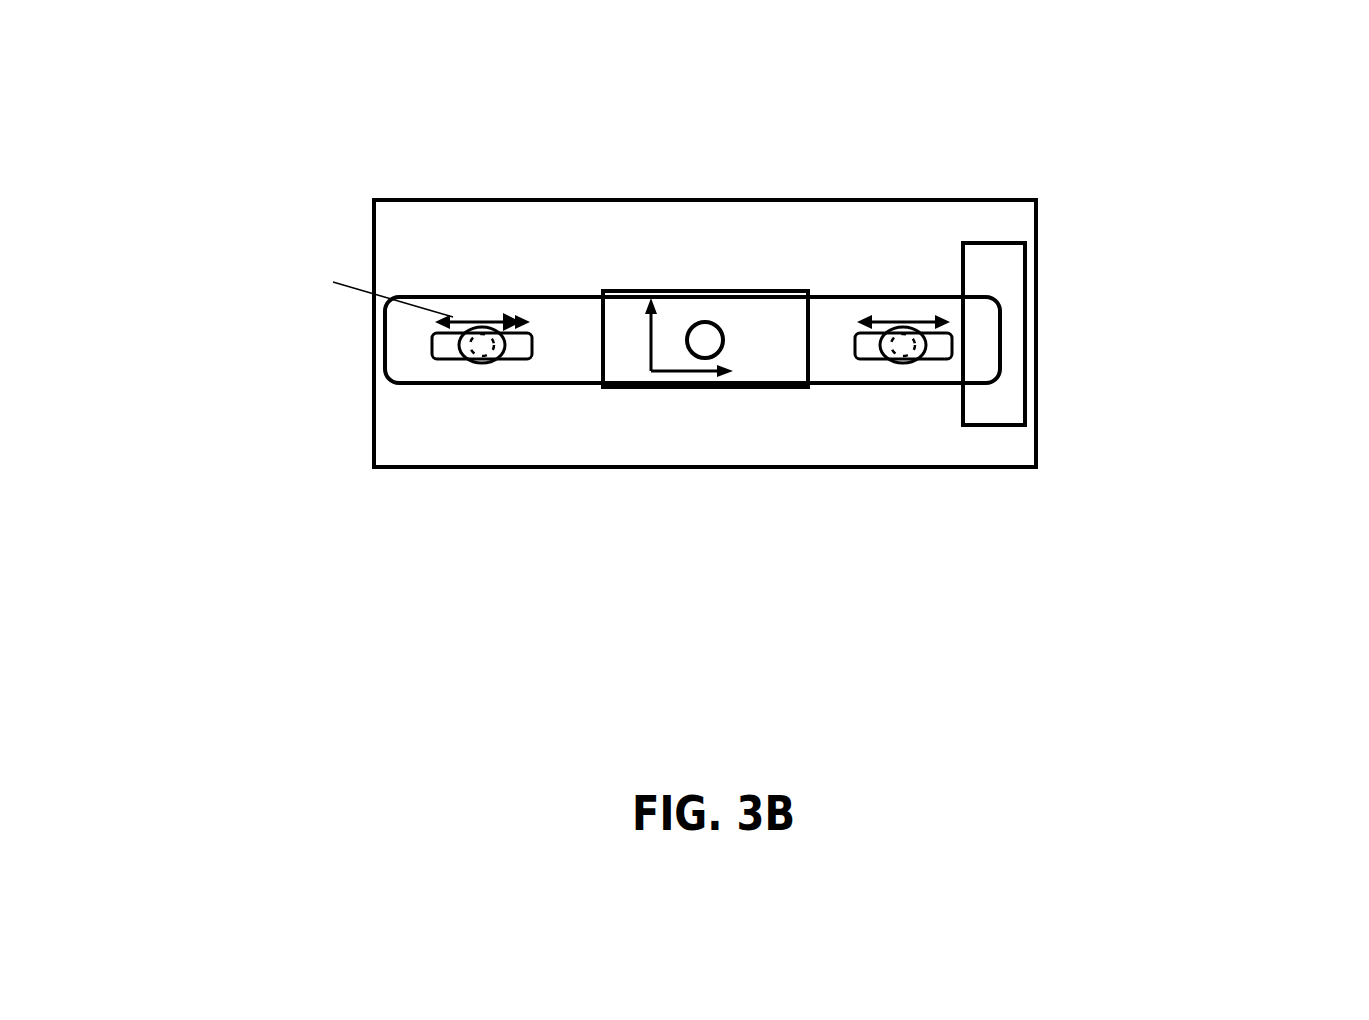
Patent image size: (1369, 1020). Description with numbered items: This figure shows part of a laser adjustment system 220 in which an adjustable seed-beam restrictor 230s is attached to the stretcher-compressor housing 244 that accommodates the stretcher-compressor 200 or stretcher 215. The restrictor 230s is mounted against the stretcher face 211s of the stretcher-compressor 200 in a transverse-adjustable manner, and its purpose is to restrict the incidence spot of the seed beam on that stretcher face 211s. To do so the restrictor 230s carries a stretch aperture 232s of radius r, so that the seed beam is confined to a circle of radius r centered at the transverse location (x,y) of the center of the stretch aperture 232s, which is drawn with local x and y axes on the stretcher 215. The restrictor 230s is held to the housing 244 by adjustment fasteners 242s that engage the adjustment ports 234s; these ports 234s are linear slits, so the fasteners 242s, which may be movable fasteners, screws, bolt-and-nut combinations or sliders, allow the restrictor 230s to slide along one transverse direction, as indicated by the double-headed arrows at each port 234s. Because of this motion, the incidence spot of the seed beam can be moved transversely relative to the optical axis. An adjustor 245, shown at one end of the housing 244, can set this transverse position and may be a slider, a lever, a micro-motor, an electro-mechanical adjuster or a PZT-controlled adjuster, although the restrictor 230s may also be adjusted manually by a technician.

The laser adjustment system 220 is at (362, 570).
The stretcher-compressor housing 244 is at (1037, 338).
The adjustor 245 is at (1000, 402).
The adjustable seed-beam restrictor 230s is at (397, 362).
The adjustment ports 234s is at (854, 353).
The adjustment fasteners 242s is at (902, 365).
The stretcher-compressor 200 is at (675, 288).
The stretcher 215 is at (667, 255).
The stretcher face 211s is at (627, 317).
The stretch aperture 232s is at (718, 324).